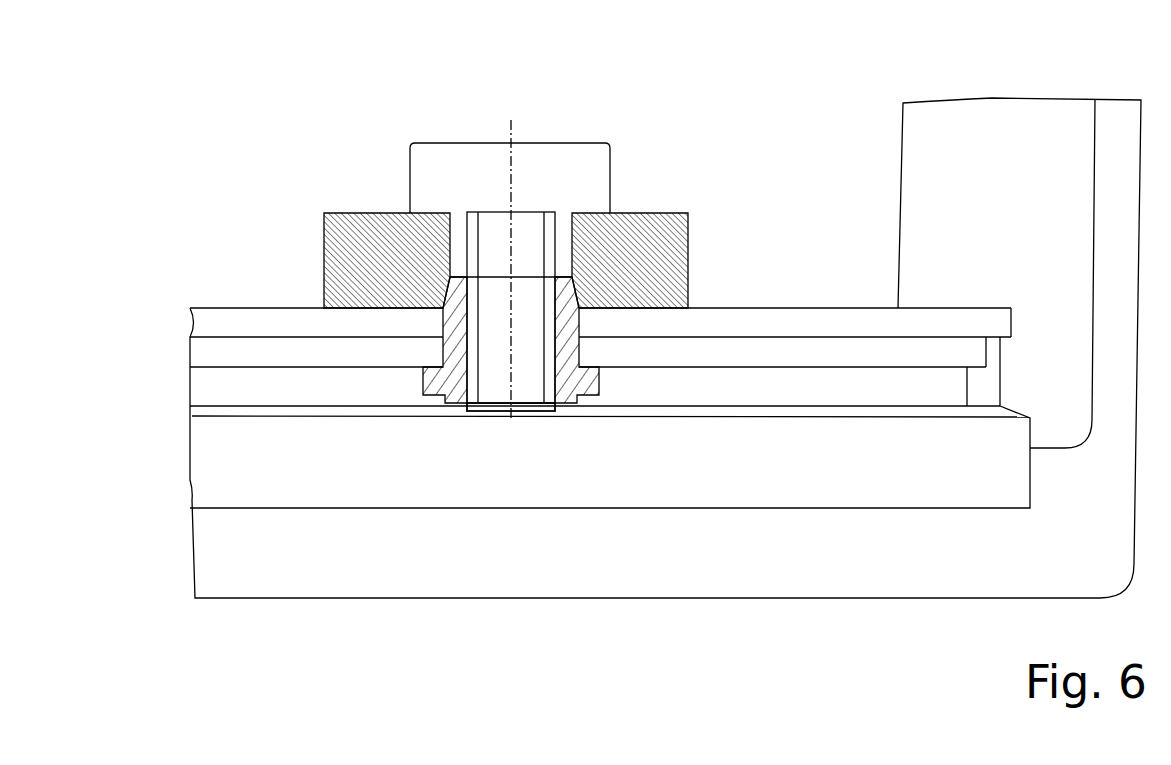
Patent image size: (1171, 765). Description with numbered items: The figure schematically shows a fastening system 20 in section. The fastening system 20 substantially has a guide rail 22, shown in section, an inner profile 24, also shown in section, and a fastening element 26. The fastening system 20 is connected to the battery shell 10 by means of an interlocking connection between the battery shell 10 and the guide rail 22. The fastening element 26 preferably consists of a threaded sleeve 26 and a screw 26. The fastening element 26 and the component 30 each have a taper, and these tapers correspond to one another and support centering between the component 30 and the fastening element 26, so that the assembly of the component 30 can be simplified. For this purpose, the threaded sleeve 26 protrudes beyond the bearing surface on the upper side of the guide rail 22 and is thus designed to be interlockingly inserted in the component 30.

The battery shell 10 is at (1027, 160).
The fastening system 20 is at (227, 140).
The guide rail 22 is at (275, 335).
The inner profile 24 is at (325, 365).
The fastening element 26 is at (543, 160).
The component 30 is at (650, 237).